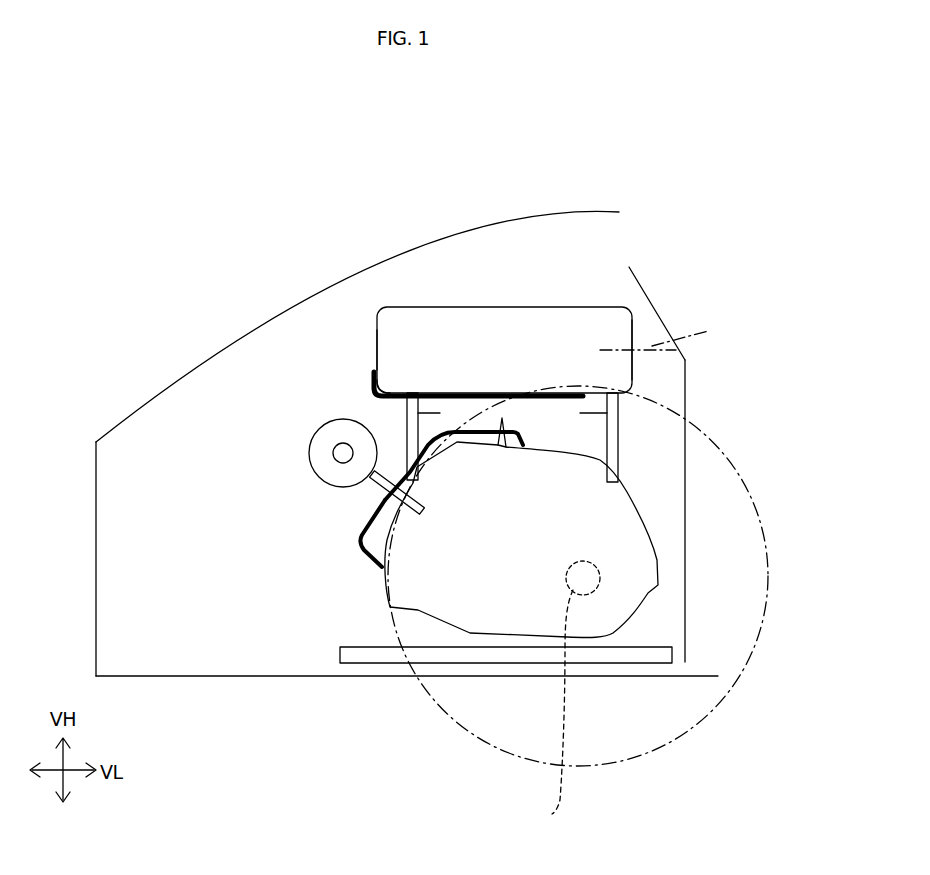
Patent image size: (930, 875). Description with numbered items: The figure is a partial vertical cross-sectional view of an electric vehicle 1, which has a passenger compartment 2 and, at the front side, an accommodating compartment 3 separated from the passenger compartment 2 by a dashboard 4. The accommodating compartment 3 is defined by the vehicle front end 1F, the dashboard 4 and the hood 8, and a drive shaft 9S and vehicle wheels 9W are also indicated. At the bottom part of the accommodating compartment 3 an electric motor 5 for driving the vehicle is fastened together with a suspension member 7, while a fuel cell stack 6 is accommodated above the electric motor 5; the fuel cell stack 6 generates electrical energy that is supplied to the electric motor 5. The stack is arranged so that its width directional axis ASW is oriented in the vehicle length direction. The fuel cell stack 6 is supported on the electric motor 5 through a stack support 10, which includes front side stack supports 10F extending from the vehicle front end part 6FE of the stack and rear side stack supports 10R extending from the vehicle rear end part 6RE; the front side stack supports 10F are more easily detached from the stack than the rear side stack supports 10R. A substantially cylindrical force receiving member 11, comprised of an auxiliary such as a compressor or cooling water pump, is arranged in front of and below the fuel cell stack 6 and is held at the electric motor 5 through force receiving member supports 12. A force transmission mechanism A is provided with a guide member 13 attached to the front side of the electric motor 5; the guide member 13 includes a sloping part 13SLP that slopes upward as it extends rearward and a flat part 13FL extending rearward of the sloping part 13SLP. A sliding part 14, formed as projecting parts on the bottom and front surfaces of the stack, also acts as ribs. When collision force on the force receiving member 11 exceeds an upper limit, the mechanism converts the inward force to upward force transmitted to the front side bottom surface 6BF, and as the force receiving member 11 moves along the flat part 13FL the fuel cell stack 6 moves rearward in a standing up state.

The electric vehicle 1 is at (753, 218).
The vehicle front end 1F is at (96, 523).
The passenger compartment 2 is at (763, 301).
The accommodating compartment 3 is at (184, 415).
The dashboard 4 is at (686, 378).
The electric motor 5 is at (427, 620).
The fuel cell stack 6 is at (460, 307).
The vehicle front end part of the fuel cell stack 6FE is at (376, 332).
The vehicle rear end part of the fuel cell stack 6RE is at (632, 328).
The front side bottom surface 6BF is at (380, 400).
The suspension member 7 is at (340, 662).
The hood 8 is at (207, 347).
The drive shaft 9S is at (563, 693).
The vehicle wheels 9W is at (703, 723).
The stack support 10 is at (742, 413).
The front side stack supports 10F is at (407, 413).
The rear side stack supports 10R is at (620, 415).
The force receiving member 11 is at (309, 453).
The force receiving member supports 12 is at (385, 490).
The guide member 13 is at (382, 567).
The flat part 13FL is at (503, 425).
The sloping part 13SLP is at (375, 500).
The sliding part 14 is at (372, 378).
The width directional axis of the fuel cell stack ASW is at (679, 332).
The force transmission mechanism A is at (265, 522).